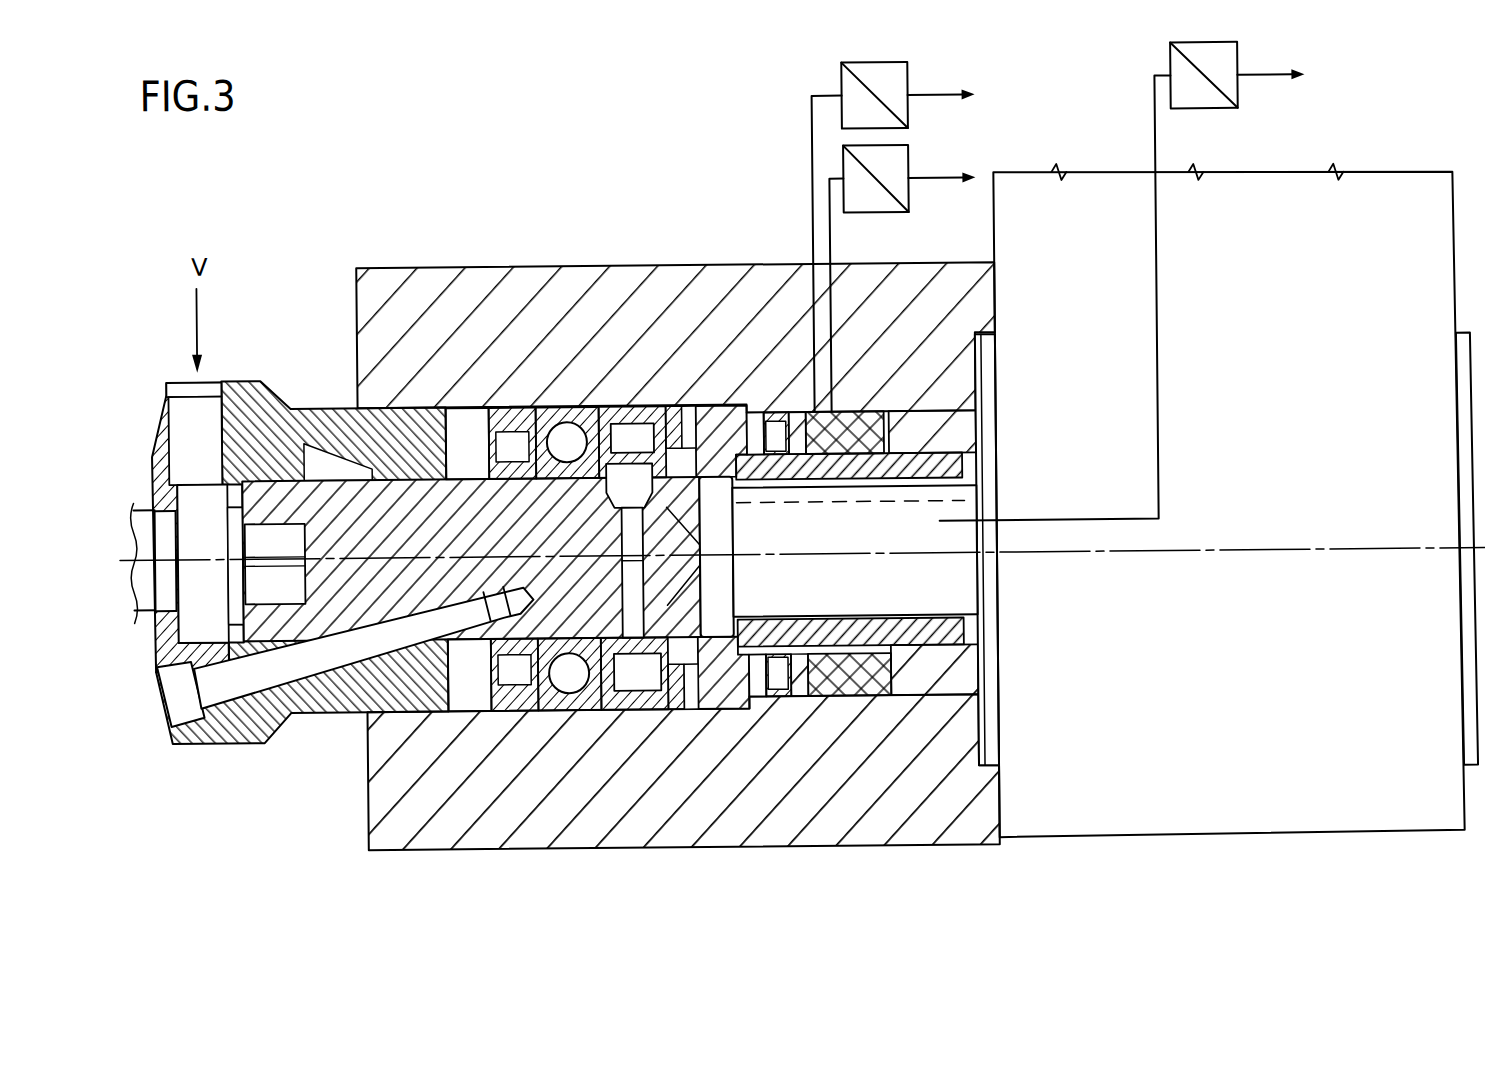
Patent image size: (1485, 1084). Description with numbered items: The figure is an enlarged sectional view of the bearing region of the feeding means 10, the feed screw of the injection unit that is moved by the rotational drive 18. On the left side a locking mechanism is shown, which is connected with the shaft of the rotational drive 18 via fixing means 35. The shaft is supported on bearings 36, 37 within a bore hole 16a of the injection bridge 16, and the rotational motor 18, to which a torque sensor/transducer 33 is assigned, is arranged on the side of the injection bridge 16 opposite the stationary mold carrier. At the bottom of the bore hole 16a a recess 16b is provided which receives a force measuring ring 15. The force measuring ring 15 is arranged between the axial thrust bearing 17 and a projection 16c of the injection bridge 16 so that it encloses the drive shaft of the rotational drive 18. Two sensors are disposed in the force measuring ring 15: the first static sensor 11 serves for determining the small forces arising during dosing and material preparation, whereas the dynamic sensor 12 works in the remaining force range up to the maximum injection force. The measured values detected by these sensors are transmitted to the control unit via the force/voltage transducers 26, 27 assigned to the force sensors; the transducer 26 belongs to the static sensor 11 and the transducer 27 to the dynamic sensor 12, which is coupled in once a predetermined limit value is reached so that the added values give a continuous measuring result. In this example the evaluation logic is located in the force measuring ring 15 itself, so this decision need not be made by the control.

The feeding means 10 is at (150, 523).
The first static sensor 11 is at (806, 410).
The dynamic sensor 12 is at (872, 413).
The force measuring ring 15 is at (875, 416).
The injection bridge 16 is at (667, 300).
The bore hole 16a is at (340, 405).
The recess 16b is at (859, 699).
The projection 16c is at (960, 436).
The axial thrust bearing 17 is at (755, 406).
The rotational drive 18 is at (1312, 424).
The force sensor/transducer 26 is at (913, 166).
The force sensor/transducer 27 is at (913, 81).
The torque sensor/transducer 33 is at (1209, 113).
The fixing means 35 is at (293, 662).
The bearing 36 is at (588, 403).
The bearing 37 is at (632, 438).